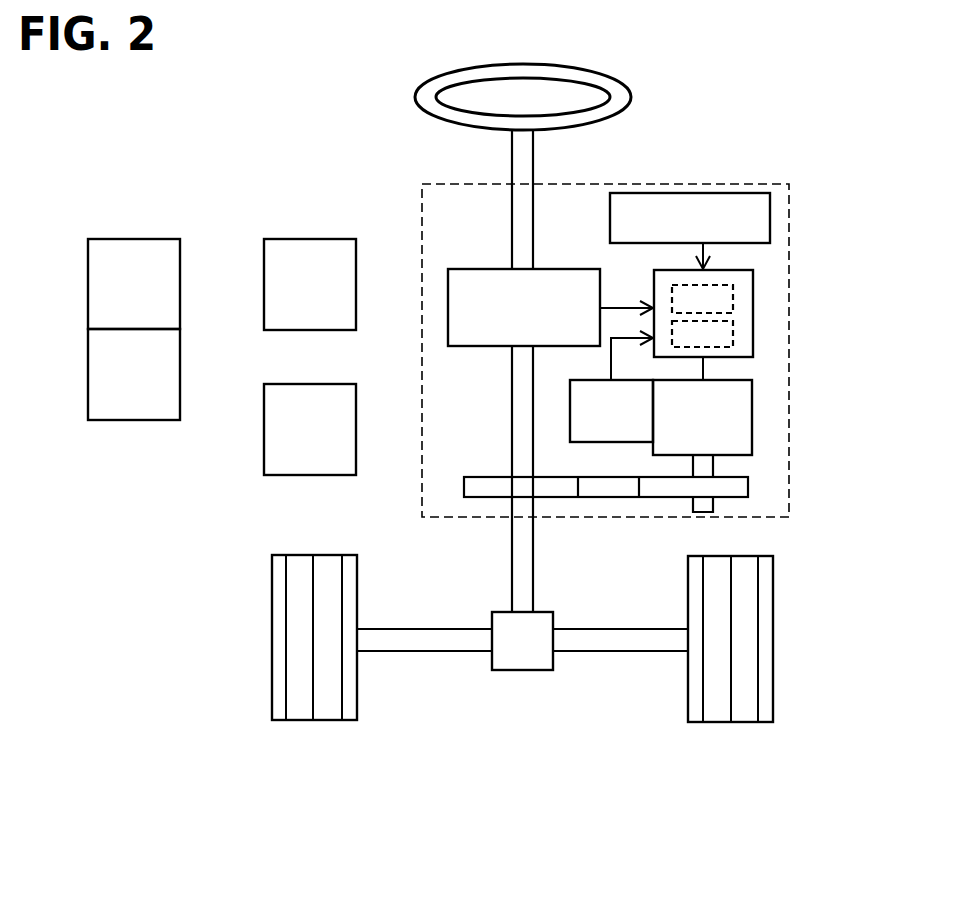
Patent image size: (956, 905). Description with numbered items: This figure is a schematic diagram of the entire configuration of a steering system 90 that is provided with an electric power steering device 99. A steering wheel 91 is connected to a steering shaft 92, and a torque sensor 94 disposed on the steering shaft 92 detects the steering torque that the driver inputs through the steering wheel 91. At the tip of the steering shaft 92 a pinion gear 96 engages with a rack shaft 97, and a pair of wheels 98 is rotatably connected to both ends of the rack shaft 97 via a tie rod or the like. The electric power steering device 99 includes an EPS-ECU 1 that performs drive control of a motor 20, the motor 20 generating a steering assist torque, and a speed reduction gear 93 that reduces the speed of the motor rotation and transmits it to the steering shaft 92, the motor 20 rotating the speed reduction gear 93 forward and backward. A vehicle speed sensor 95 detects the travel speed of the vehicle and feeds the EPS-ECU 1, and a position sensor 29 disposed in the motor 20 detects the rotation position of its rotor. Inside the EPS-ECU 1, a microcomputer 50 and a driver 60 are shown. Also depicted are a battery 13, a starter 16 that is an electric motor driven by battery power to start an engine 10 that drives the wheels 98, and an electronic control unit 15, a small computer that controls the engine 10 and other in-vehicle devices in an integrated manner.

The EPS-ECU 1 is at (753, 270).
The engine 10 is at (88, 267).
The battery 13 is at (264, 422).
The electronic control unit (ECU) 15 is at (264, 267).
The starter 16 is at (88, 369).
The motor 20 is at (752, 408).
The position sensor 29 is at (570, 405).
The microcomputer 50 is at (733, 298).
The driver 60 is at (733, 338).
The steering system 90 is at (477, 762).
The steering wheel 91 is at (415, 97).
The steering shaft 92 is at (512, 160).
The speed reduction gear 93 is at (748, 485).
The torque sensor 94 is at (448, 316).
The vehicle speed sensor 95 is at (772, 221).
The pinion gear 96 is at (515, 670).
The rack shaft 97 is at (418, 651).
The wheels 98 is at (327, 720).
The electric power steering device 99 is at (712, 184).